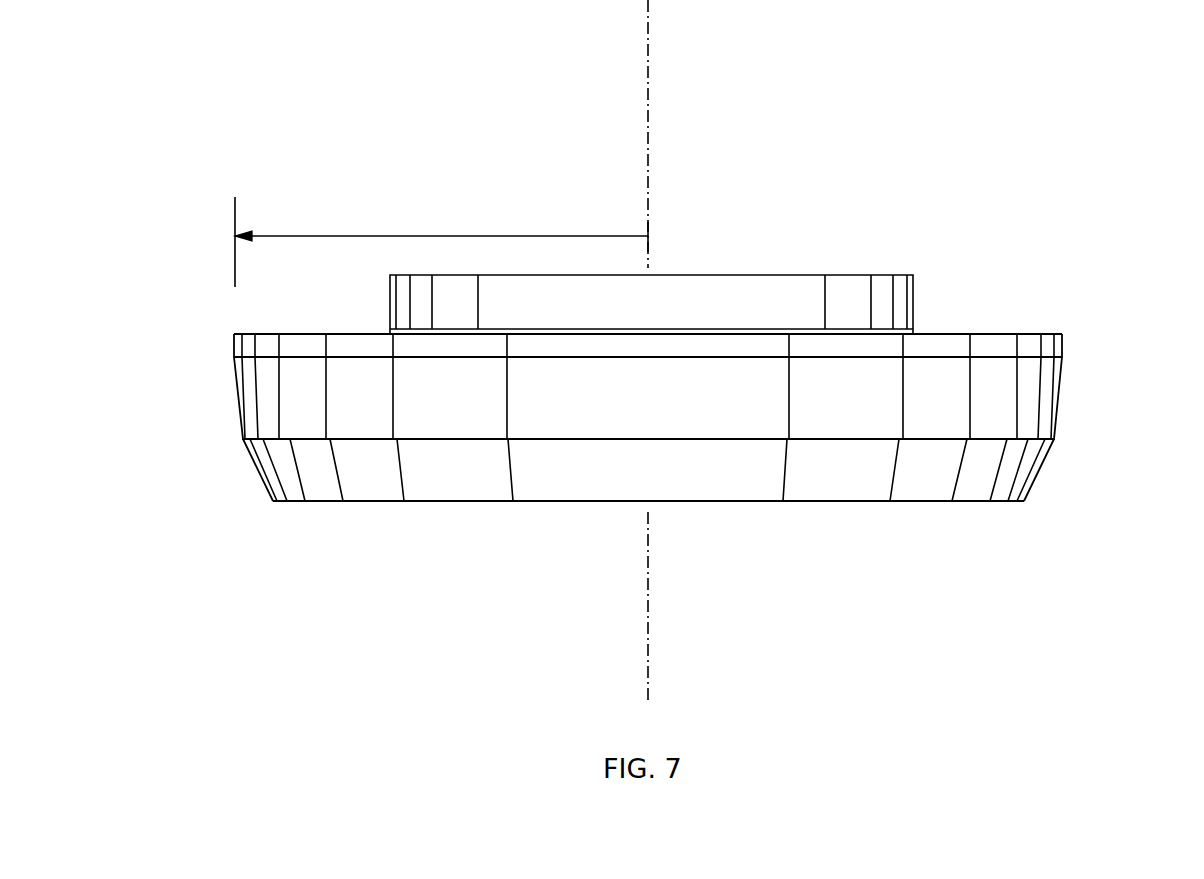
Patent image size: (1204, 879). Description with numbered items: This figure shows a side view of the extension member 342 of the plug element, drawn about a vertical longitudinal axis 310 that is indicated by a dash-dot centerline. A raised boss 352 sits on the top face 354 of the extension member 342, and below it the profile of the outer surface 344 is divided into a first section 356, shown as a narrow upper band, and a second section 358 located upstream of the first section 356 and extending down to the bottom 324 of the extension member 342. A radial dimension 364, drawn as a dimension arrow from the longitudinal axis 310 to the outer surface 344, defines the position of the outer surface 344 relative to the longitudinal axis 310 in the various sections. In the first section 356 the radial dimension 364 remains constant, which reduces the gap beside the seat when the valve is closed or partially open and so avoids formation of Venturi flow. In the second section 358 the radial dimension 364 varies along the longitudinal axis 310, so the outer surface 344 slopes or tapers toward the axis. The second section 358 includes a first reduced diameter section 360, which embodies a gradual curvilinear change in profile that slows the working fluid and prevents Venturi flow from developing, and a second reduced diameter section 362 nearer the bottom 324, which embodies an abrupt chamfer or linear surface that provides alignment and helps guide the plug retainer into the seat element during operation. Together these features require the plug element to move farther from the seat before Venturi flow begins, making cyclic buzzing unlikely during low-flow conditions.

The longitudinal axis 310 is at (649, 52).
The bottom 324 is at (983, 502).
The extension member 342 is at (909, 126).
The outer surface 344 is at (614, 419).
The raised boss / plate 352 is at (915, 287).
The top surface 354 is at (1033, 334).
The first section 356 is at (601, 315).
The second section 358 is at (574, 463).
The first reduced diameter section 360 is at (223, 359).
The second reduced diameter section 362 is at (609, 504).
The radial dimension 364 is at (449, 235).